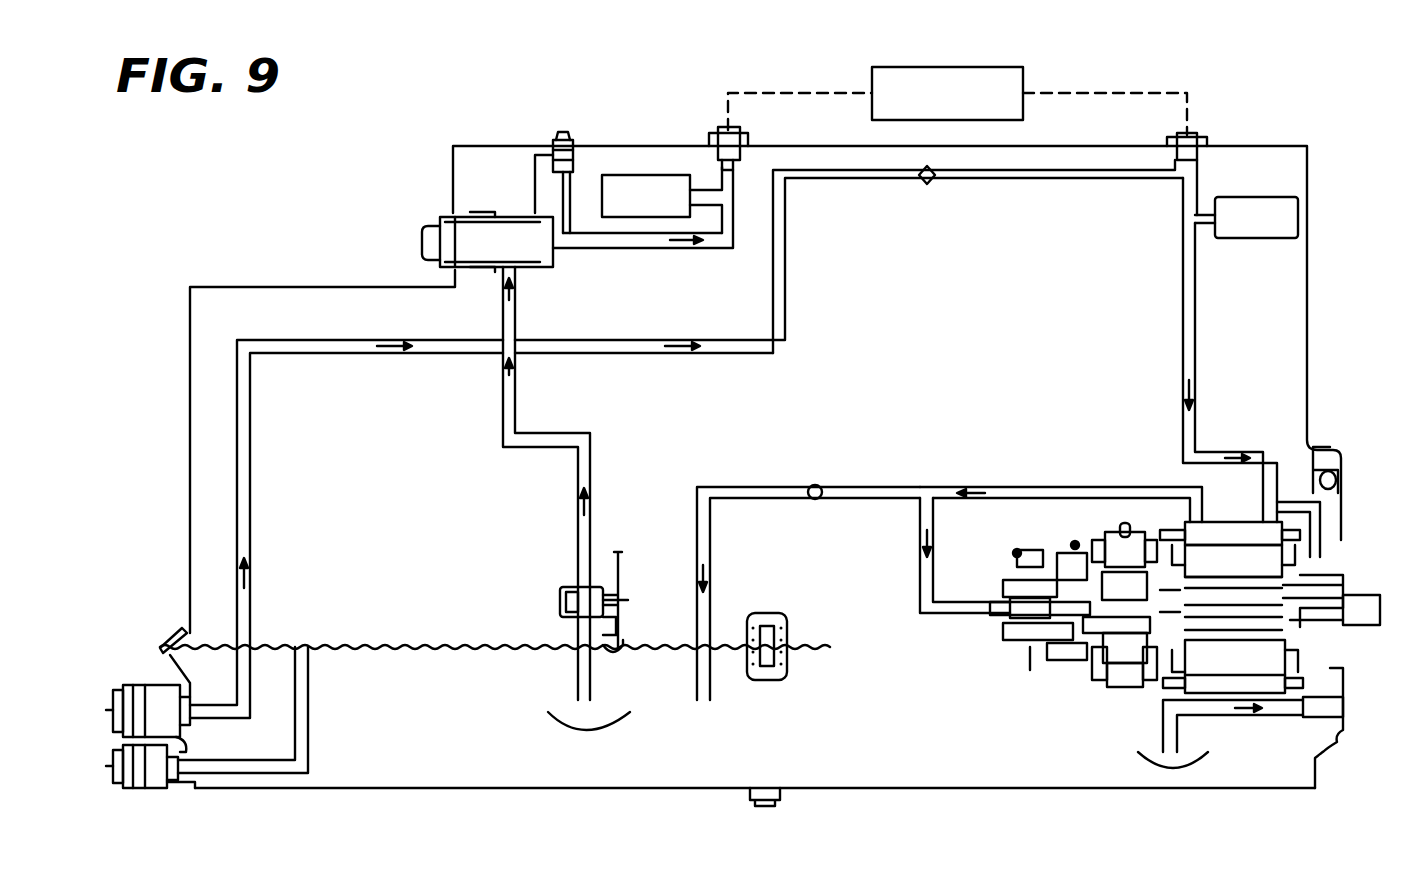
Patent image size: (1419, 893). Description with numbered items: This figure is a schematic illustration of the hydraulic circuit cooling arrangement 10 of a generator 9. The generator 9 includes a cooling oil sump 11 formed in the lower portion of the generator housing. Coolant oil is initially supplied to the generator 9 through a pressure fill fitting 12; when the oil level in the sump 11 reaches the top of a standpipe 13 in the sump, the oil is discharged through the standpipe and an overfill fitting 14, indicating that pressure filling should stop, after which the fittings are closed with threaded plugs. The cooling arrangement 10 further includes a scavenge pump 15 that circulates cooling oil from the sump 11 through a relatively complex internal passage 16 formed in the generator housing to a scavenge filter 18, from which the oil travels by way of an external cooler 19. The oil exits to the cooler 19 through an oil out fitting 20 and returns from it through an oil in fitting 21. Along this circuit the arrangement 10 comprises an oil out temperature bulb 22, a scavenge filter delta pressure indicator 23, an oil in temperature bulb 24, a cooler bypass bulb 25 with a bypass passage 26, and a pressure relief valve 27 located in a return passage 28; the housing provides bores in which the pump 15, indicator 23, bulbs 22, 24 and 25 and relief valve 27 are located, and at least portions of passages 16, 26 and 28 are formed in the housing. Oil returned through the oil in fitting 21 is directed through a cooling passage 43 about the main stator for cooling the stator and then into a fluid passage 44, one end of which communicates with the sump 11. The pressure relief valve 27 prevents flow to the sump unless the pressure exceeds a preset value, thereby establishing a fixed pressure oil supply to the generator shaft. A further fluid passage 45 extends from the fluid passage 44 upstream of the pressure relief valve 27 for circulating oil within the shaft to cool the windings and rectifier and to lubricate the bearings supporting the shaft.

The generator 9 is at (1297, 164).
The hydraulic circuit cooling arrangement 10 is at (222, 413).
The cooling oil sump 11 is at (520, 762).
The pressure fill fitting 12 is at (119, 676).
The standpipe 13 is at (314, 742).
The overfill fitting 14 is at (126, 788).
The scavenge pump 15 is at (565, 598).
The internal passage 16 is at (503, 432).
The scavenge filter 18 is at (442, 217).
The external cooler 19 is at (1013, 83).
The oil out fitting 20 is at (727, 134).
The oil in fitting 21 is at (1202, 142).
The oil out temperature bulb 22 is at (622, 183).
The scavenge filter delta pressure indicator 23 is at (540, 130).
The oil in temperature bulb 24 is at (1285, 218).
The cooler bypass bulb 25 is at (932, 182).
The bypass passage 26 is at (790, 290).
The pressure relief valve 27 is at (816, 474).
The return passage 28 is at (733, 486).
The cooling passage 43 is at (1196, 322).
The fluid passage 44 is at (1060, 486).
The fluid passage 45 is at (918, 582).